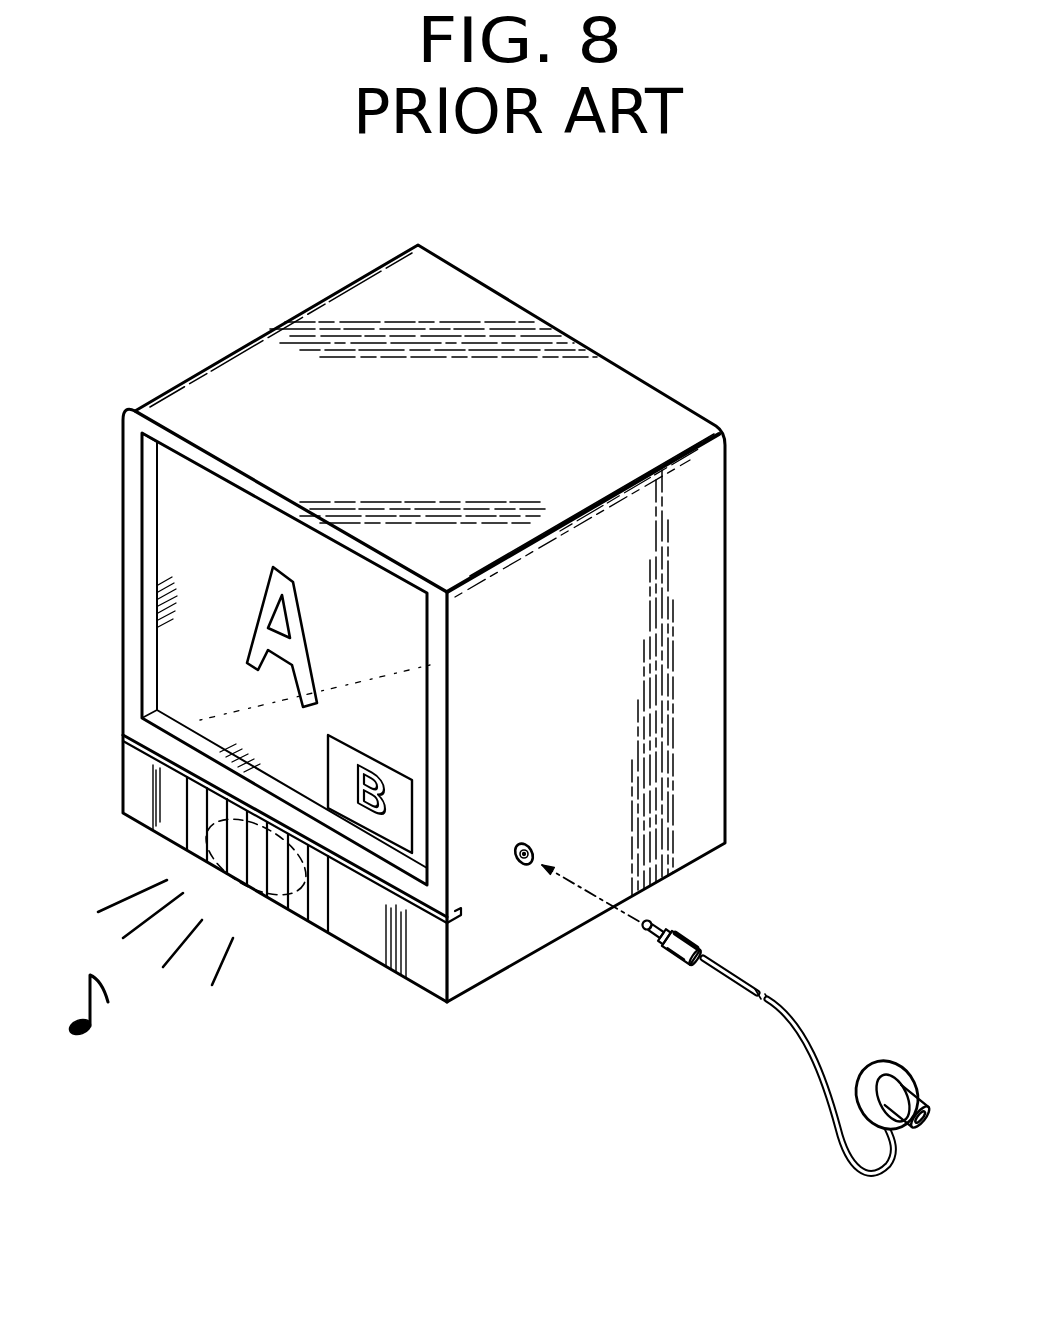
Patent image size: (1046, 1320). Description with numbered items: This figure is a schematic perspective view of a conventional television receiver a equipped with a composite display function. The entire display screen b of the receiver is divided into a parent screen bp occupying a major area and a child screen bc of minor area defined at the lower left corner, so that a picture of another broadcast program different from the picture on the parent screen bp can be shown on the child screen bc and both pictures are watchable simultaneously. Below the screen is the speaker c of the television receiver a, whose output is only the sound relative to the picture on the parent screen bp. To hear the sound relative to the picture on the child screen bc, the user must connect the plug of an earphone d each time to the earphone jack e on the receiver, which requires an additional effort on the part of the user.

The television receiver a is at (686, 343).
The display screen b is at (157, 553).
The parent screen bp is at (242, 507).
The child screen bc is at (403, 788).
The speaker c is at (297, 907).
The earphone d is at (897, 1060).
The earphone jack e is at (535, 847).